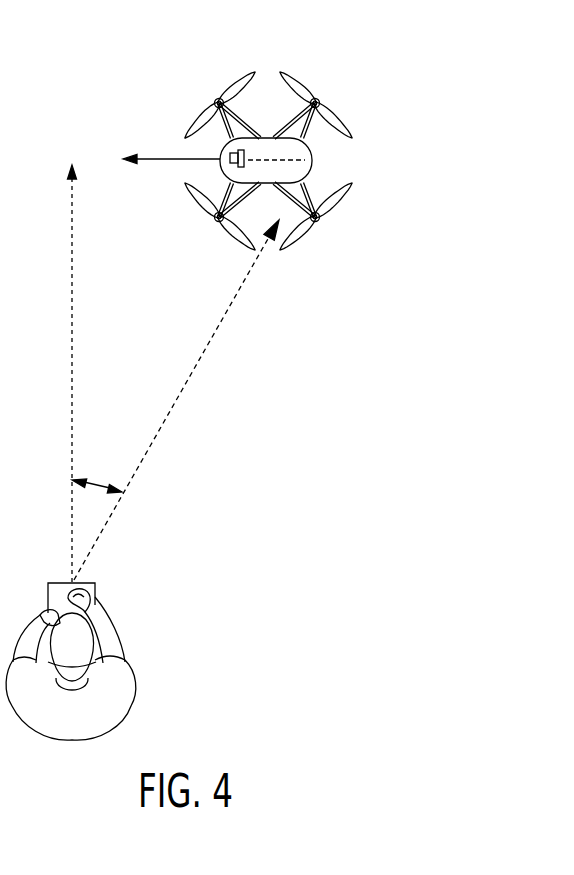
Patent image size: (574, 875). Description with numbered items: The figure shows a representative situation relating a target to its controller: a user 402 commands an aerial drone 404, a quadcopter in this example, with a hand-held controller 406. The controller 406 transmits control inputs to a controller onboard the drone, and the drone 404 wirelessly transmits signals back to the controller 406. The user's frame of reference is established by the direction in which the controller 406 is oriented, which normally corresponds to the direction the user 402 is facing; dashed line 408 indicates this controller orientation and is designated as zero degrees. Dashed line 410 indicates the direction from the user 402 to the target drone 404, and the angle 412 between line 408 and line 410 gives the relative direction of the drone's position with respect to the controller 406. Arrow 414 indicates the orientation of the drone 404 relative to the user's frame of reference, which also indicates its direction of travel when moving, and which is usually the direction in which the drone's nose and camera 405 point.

The user 402 is at (133, 693).
The aerial drone 404 is at (290, 147).
The camera 405 is at (240, 149).
The hand-held controller 406 is at (97, 594).
The line indicating the user's frame of reference 408 is at (71, 330).
The dashed line indicating direction to the target 410 is at (193, 382).
The angle 412 is at (100, 481).
The arrow indicating orientation of the target 414 is at (173, 162).